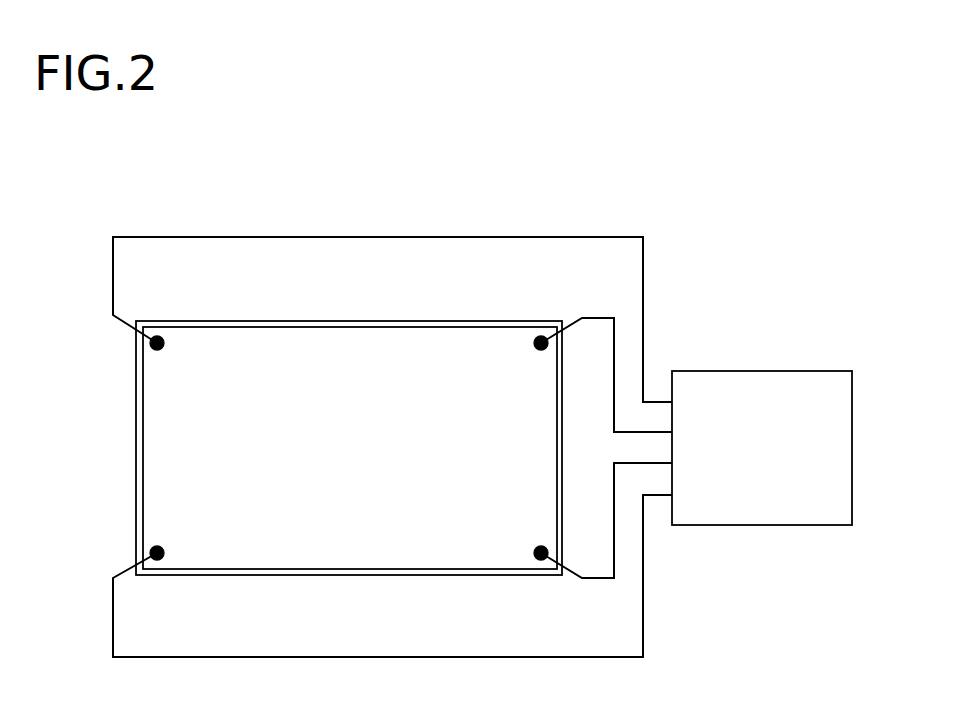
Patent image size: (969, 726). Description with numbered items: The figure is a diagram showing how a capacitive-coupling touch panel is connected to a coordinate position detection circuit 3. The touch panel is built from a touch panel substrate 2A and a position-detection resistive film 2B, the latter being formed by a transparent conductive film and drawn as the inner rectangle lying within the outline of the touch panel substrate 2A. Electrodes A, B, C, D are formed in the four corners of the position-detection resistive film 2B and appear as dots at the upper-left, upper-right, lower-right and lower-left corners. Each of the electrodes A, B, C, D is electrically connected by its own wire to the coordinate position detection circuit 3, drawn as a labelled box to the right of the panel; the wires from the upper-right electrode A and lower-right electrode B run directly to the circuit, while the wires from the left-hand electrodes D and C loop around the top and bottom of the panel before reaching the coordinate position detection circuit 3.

The touch panel substrate 2A is at (385, 576).
The position-detection resistive film 2B is at (215, 477).
The electrode A is at (548, 350).
The electrode B is at (547, 547).
The electrode C is at (150, 548).
The electrode D is at (150, 350).
The coordinate position detection circuit 3 is at (763, 371).